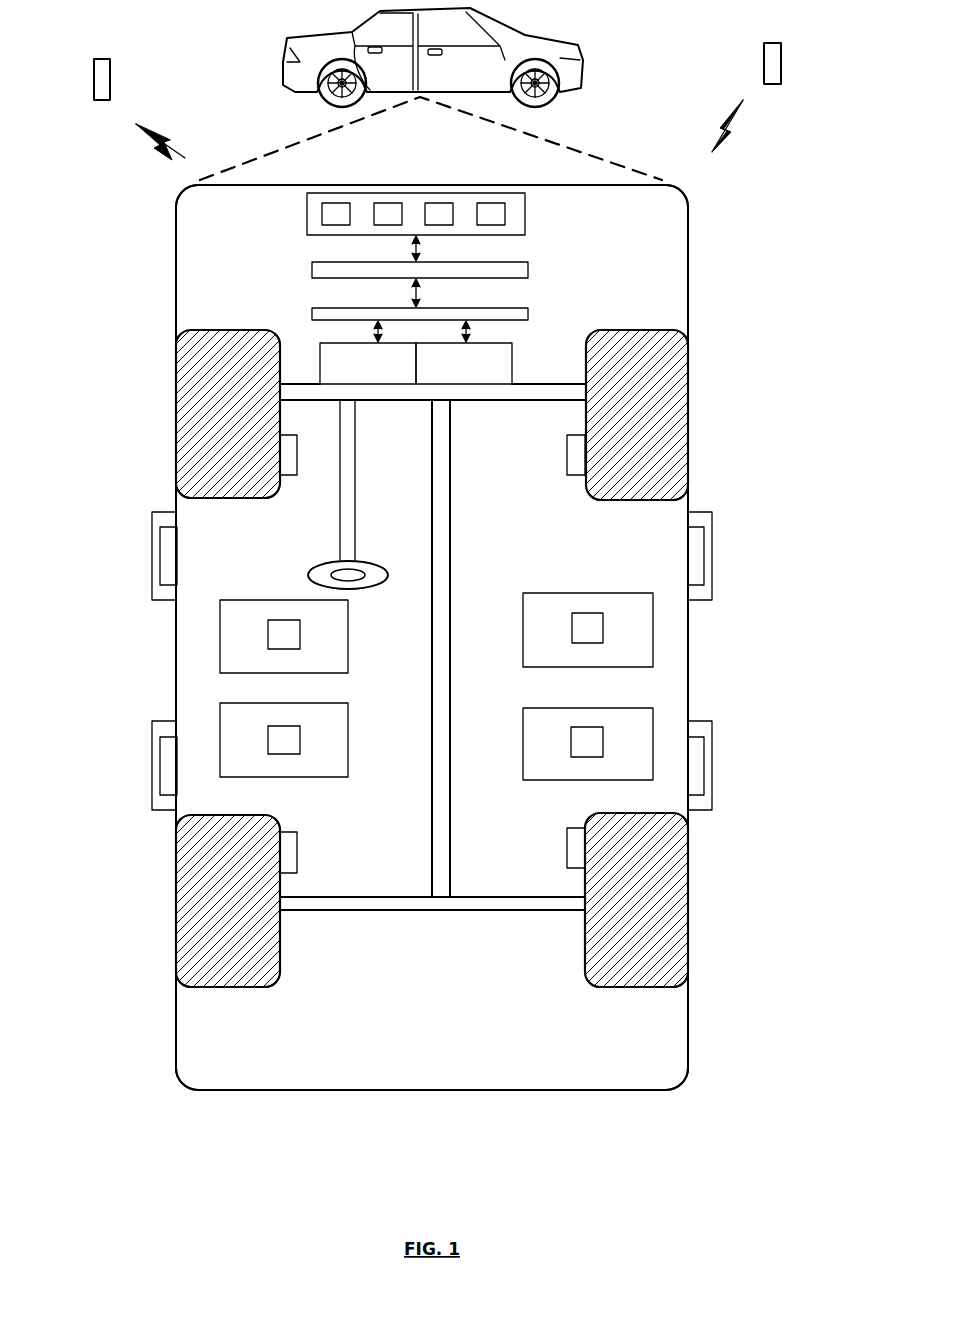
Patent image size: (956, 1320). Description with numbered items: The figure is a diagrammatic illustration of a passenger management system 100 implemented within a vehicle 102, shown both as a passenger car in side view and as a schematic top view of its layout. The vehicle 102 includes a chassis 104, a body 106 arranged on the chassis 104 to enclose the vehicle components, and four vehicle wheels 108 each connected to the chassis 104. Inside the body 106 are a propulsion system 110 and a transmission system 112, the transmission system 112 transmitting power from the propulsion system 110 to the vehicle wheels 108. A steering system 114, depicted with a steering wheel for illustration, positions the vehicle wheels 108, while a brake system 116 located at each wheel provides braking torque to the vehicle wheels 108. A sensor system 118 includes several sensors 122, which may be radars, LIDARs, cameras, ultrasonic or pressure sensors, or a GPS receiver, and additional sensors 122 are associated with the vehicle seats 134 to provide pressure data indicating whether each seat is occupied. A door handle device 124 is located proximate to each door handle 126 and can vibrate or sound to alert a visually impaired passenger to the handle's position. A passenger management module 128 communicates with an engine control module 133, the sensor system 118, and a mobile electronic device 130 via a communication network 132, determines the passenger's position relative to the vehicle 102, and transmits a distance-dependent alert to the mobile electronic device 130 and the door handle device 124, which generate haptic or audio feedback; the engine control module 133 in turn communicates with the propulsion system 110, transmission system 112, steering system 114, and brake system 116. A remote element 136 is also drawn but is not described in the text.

The passenger management system 100 is at (143, 205).
The vehicle 102 is at (555, 42).
The chassis 104 is at (450, 485).
The body 106 is at (688, 322).
The vehicle wheels 108 is at (230, 330).
The propulsion system 110 is at (464, 363).
The transmission system 112 is at (368, 363).
The steering system 114 is at (355, 495).
The brake system 116 is at (290, 475).
The sensor system 118 is at (525, 220).
The sensors 122 is at (338, 203).
The door handle device 124 is at (156, 555).
The door handle 126 is at (153, 585).
The passenger management module 128 is at (312, 271).
The mobile electronic device 130 is at (781, 43).
The communication network 132 is at (175, 136).
The engine control module 133 is at (528, 314).
The vehicle seats 134 is at (348, 650).
The remote server 136 is at (110, 60).